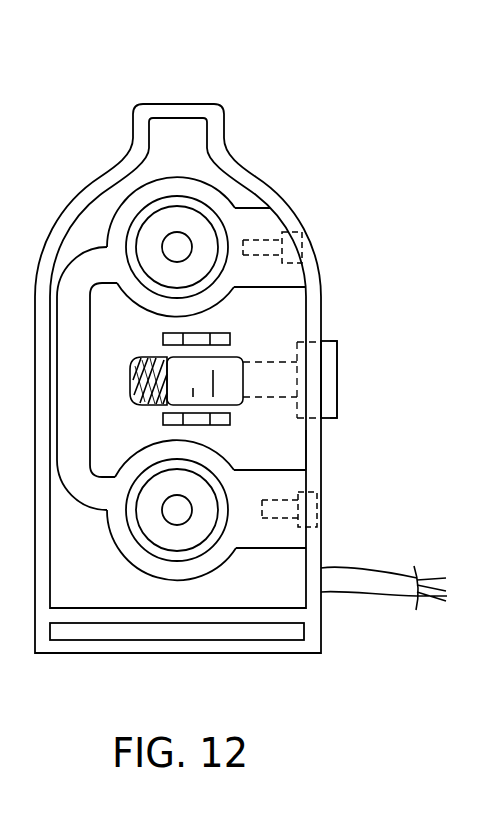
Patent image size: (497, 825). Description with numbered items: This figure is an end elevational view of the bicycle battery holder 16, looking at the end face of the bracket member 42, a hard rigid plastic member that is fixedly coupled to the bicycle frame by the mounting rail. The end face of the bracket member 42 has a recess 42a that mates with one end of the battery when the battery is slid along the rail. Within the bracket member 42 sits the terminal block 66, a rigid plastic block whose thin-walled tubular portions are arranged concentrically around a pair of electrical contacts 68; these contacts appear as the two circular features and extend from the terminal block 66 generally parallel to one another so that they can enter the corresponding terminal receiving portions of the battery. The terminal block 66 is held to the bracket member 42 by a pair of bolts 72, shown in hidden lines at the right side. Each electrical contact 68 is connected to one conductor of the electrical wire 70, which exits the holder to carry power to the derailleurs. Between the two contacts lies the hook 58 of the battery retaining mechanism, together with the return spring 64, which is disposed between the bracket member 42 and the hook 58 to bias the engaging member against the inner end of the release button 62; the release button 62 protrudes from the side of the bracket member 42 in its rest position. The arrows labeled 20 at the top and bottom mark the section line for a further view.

The bicycle battery holder 16 is at (288, 143).
The section line 20 is at (178, 90).
The bracket member 42 is at (323, 352).
The recess 42a is at (280, 445).
The hook 58 is at (229, 370).
The release button 62 is at (338, 394).
The return spring 64 is at (130, 375).
The terminal block 66 is at (89, 487).
The electrical contacts 68 is at (174, 232).
The electrical wire 70 is at (373, 594).
The bolts 72 is at (303, 232).